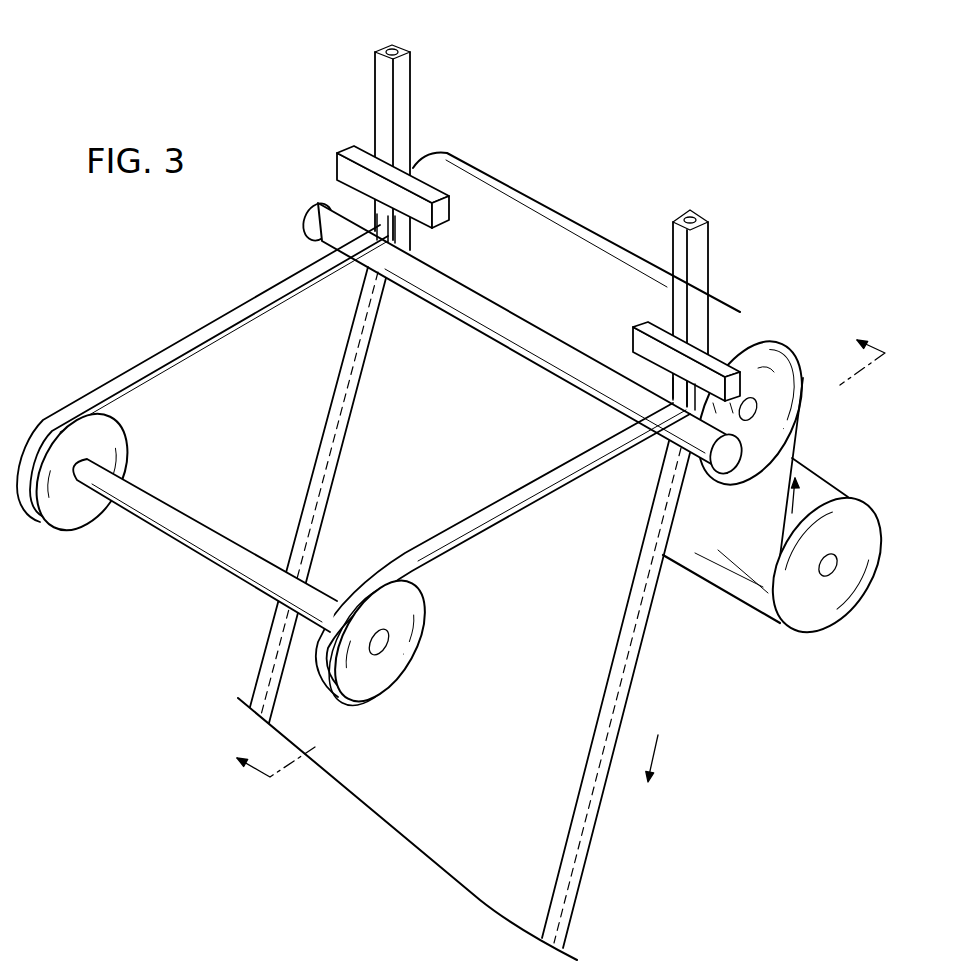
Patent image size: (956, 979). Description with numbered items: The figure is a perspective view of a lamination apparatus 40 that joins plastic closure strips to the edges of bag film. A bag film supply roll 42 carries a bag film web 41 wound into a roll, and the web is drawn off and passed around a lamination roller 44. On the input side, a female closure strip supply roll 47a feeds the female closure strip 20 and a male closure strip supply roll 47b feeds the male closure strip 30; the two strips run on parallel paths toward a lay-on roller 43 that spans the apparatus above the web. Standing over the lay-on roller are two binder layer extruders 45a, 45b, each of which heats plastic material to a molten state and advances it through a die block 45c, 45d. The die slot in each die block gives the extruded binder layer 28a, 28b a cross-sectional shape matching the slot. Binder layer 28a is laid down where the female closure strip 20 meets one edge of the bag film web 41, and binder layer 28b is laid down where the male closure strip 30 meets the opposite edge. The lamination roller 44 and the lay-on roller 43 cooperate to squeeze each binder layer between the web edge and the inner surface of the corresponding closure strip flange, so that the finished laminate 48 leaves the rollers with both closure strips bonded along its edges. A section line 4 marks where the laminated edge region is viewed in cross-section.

The section line 4- 4 is at (565, 560).
The female closure strip 20 is at (178, 328).
The binder layer 28a is at (410, 234).
The binder layer 28b is at (662, 379).
The male closure strip 30 is at (518, 524).
The lamination apparatus 40 is at (784, 735).
The bag film web 41 is at (805, 440).
The bag film supply roll 42 is at (866, 512).
The lay-on roller 43 is at (302, 202).
The lamination roller 44 is at (800, 390).
The binder layer extruder 45a is at (432, 66).
The binder layer extruder 45b is at (724, 246).
The die block 45c is at (333, 146).
The die block 45d is at (642, 311).
The female closure strip supply roll 47a is at (88, 514).
The male closure strip supply roll 47b is at (395, 675).
The substrate plate 48 is at (491, 817).